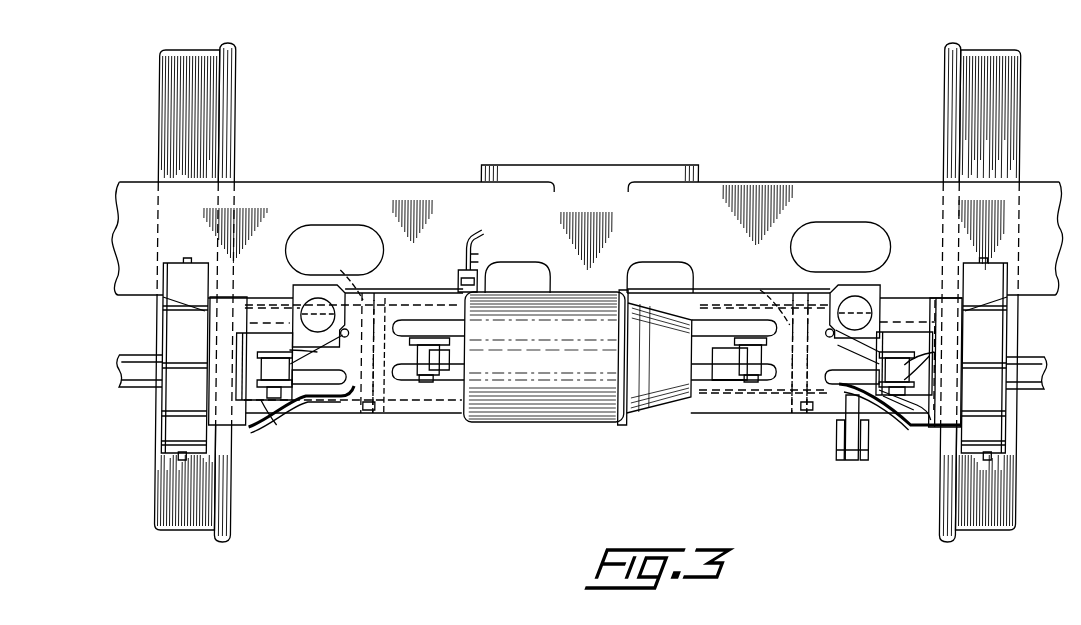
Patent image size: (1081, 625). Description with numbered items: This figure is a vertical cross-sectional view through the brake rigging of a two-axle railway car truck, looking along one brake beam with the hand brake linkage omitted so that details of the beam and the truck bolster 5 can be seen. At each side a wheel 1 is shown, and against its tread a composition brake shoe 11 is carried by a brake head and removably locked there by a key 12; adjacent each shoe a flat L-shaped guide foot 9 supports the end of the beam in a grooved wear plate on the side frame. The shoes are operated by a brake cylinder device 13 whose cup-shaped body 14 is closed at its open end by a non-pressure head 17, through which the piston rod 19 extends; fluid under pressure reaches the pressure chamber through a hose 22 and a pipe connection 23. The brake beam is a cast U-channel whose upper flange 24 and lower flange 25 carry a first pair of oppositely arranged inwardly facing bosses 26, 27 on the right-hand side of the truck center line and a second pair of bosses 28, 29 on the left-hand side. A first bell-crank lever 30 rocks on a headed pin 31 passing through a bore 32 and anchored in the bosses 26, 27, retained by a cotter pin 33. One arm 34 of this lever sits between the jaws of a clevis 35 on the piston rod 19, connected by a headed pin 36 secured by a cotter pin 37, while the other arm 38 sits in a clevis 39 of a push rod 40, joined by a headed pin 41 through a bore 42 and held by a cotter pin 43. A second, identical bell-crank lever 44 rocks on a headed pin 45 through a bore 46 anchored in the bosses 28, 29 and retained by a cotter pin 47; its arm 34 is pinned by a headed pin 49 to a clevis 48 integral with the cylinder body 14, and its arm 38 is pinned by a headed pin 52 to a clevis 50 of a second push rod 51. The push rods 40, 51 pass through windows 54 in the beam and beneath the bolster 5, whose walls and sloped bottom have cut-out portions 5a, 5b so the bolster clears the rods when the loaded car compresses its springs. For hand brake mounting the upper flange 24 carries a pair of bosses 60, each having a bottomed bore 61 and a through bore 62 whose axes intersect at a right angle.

The wheel 1 is at (180, 88).
The truck bolster 5 is at (800, 195).
The cut-out portion 5a is at (895, 312).
The cut-out portion 5b is at (285, 308).
The guide foot 9 is at (132, 375).
The brake shoe 11 is at (178, 434).
The key 12 is at (180, 457).
The brake cylinder device 13 is at (527, 426).
The cup-shaped body 14 is at (590, 398).
The non-pressure head 17 is at (644, 413).
The piston rod 19 is at (712, 352).
The hose 22 is at (478, 250).
The pipe connection 23 is at (458, 286).
The upper flange 24 is at (440, 318).
The lower flange 25 is at (447, 400).
The boss 26 is at (775, 320).
The boss 27 is at (790, 390).
The boss 28 is at (398, 318).
The boss 29 is at (392, 400).
The first bell-crank lever 30 is at (838, 384).
The headed pin 31 is at (808, 305).
The bore 32 is at (776, 300).
The cotter pin 33 is at (806, 410).
The arm 34 is at (440, 358).
The clevis 35 is at (715, 365).
The headed pin 36 is at (740, 340).
The cotter pin 37 is at (720, 385).
The arm 38 is at (322, 388).
The clevis 39 is at (935, 352).
The push rod 40 is at (852, 348).
The headed pin 41 is at (898, 358).
The bore 42 is at (906, 362).
The cotter pin 43 is at (902, 412).
The second bell-crank lever 44 is at (318, 396).
The headed pin 45 is at (353, 276).
The bore 46 is at (385, 300).
The cotter pin 47 is at (369, 410).
The clevis 48 is at (450, 348).
The headed pin 49 is at (428, 342).
The clevis 50 is at (290, 355).
The second push rod 51 is at (292, 405).
The headed pin 52 is at (276, 356).
The window 54 is at (244, 420).
The boss 60 is at (330, 296).
The bottomed bore 61 is at (320, 298).
The through bore 62 is at (338, 296).